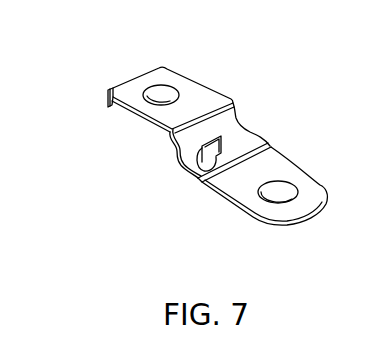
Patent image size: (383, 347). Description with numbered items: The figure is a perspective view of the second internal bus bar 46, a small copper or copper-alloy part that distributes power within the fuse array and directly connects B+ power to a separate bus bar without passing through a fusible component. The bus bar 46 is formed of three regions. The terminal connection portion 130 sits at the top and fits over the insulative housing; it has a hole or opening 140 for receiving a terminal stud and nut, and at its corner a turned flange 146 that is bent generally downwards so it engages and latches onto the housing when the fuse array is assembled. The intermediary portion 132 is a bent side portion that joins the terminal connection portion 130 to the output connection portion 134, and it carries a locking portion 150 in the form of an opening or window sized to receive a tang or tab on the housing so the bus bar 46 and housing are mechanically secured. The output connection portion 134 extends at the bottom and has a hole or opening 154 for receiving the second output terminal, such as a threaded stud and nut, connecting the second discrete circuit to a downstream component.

The second internal bus bar 46 is at (187, 147).
The terminal connection portion 130 is at (203, 105).
The intermediary portion 132 is at (256, 141).
The output connection portion 134 is at (307, 197).
The hole or opening 140 is at (147, 94).
The turned flange 146 is at (108, 99).
The locking portion 150 is at (216, 157).
The hole or opening 154 is at (278, 199).